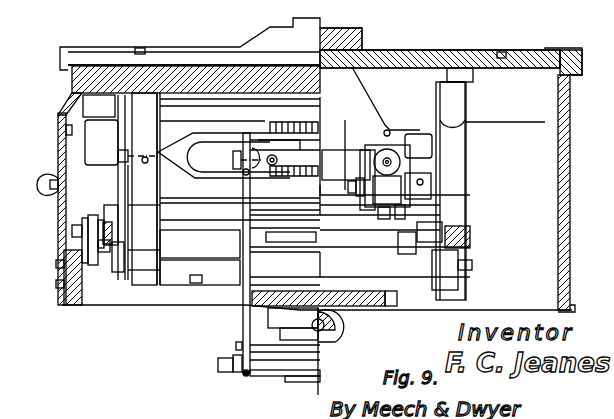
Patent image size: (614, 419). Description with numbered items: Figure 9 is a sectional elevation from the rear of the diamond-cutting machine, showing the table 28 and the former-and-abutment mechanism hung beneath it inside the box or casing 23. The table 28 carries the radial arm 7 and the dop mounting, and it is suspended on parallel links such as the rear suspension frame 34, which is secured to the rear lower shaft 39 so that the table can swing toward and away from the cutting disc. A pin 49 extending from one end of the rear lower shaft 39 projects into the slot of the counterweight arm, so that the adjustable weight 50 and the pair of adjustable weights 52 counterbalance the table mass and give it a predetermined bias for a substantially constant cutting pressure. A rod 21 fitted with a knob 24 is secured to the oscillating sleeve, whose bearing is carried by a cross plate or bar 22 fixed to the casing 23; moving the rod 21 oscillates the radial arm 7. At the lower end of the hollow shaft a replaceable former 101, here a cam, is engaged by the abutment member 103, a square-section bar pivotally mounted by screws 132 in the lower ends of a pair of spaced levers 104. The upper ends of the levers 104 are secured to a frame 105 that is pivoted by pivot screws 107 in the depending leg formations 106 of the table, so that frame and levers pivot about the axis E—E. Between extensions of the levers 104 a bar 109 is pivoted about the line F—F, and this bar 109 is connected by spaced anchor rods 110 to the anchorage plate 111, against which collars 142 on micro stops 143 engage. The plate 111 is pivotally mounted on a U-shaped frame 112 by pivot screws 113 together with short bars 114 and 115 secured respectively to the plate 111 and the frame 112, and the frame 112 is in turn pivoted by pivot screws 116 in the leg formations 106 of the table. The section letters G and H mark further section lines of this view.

The radial arm 7 is at (330, 40).
The table 28 is at (416, 56).
The box or casing 23 is at (558, 240).
The adjustable weight 50 is at (101, 142).
The pivot screws 107 is at (124, 166).
The depending leg formations 106 is at (148, 193).
The adjustable weights 52 is at (115, 218).
The rear suspension link or frame 34 is at (159, 231).
The pin 49 is at (110, 262).
The rear lower shaft 39 is at (222, 262).
The frame 105 is at (218, 178).
The levers or arms 104 is at (243, 322).
The replaceable former 101 is at (218, 366).
The screws 132 is at (236, 373).
The abutment member 103 is at (280, 370).
The cross plate or bar 22 is at (358, 306).
The rod 21 is at (326, 335).
The knob 24 is at (332, 328).
The anchorage plate 111 is at (343, 153).
The bar 109 is at (314, 163).
The short bar 114 is at (362, 170).
The anchor rods 110 is at (388, 131).
The micro stops 143 is at (388, 160).
The collars 142 is at (394, 180).
The pivot screws 116 is at (425, 178).
The U-shaped frame 112 is at (420, 205).
The pivot screws 113 is at (352, 205).
The short bar 115 is at (386, 205).
The axis E— E is at (118, 157).
The line F— F is at (233, 160).
The section line G is at (348, 188).
The section line H is at (472, 187).